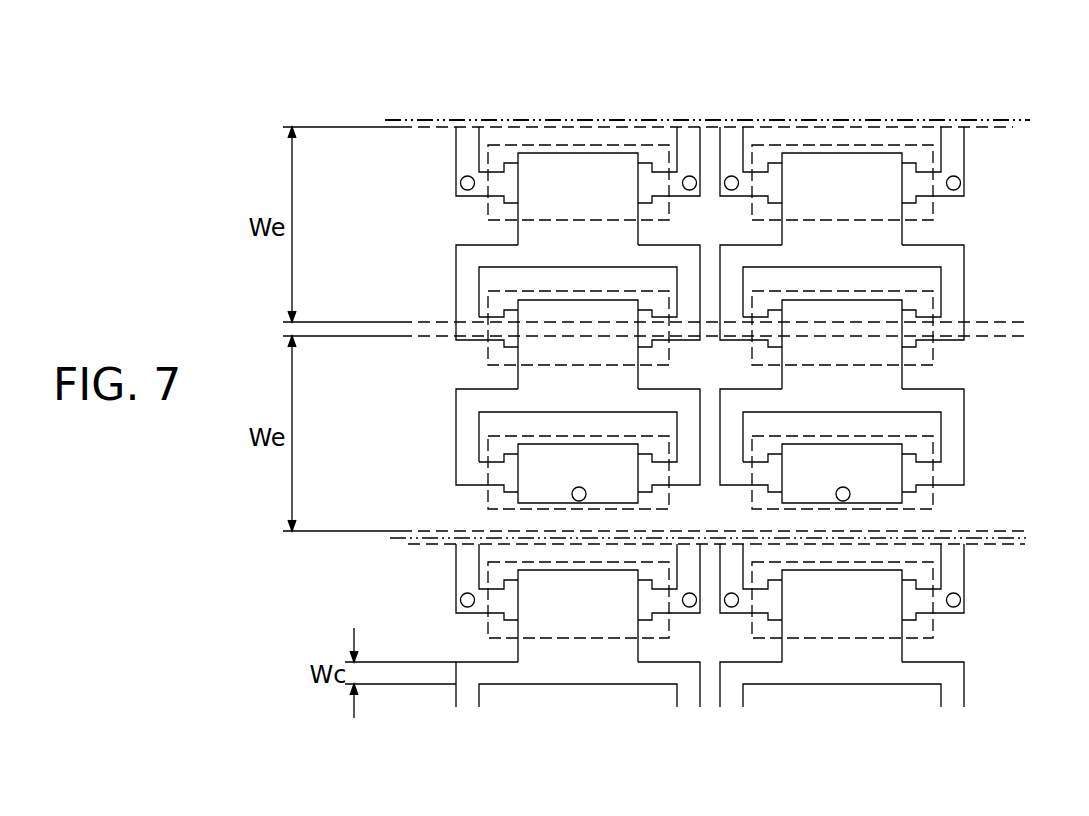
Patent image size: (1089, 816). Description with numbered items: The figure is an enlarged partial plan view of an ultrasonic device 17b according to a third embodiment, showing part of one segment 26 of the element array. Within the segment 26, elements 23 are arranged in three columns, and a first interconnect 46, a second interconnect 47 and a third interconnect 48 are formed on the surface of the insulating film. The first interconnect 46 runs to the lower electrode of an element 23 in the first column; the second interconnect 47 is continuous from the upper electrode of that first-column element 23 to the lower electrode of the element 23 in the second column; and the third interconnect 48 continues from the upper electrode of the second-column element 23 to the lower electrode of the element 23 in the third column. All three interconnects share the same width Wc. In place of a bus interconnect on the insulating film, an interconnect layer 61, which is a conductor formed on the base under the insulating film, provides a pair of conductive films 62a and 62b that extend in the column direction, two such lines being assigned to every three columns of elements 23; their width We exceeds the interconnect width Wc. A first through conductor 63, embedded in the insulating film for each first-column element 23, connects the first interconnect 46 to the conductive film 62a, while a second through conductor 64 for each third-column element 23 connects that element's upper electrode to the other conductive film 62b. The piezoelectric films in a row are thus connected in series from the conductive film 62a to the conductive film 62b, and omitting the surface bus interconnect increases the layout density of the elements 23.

The ultrasonic device 17b is at (404, 108).
The element 23 is at (525, 126).
The segment 26 is at (1015, 121).
The first interconnect 46 is at (466, 127).
The second interconnect 47 is at (457, 262).
The third interconnect 48 is at (457, 404).
The interconnect layer 61 is at (903, 118).
The conductive film 62a is at (843, 126).
The conductive film 62b is at (1026, 336).
The first through conductor 63 is at (461, 181).
The second through conductor 64 is at (573, 494).